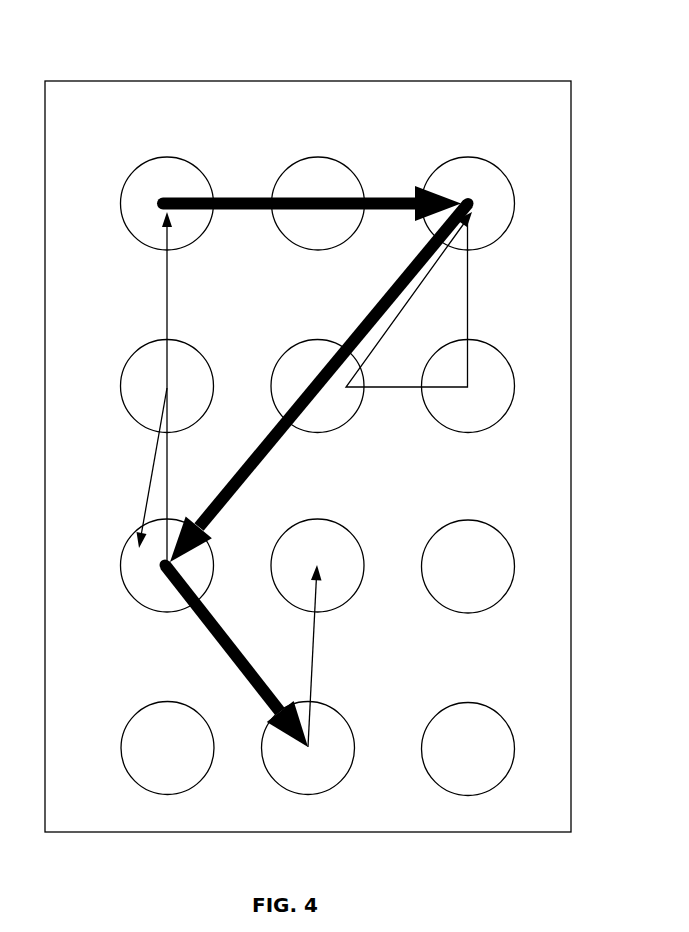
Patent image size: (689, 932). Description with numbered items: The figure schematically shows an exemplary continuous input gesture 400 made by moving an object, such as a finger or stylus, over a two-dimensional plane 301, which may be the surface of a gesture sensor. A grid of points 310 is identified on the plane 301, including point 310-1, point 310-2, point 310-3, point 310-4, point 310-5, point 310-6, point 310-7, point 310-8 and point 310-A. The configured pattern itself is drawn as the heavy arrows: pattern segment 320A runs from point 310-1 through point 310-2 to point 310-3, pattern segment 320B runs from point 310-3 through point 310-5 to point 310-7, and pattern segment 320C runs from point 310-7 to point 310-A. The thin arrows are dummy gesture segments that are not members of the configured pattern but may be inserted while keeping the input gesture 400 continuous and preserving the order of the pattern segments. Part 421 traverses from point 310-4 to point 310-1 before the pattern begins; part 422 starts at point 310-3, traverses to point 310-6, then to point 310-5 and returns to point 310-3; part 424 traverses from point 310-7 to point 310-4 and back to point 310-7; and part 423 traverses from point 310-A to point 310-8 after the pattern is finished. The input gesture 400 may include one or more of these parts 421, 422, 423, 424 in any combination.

The input gesture 400 is at (308, 420).
The two-dimensional plane 301 is at (308, 456).
The points 310 is at (318, 658).
The point 310-1 is at (167, 203).
The point 310-2 is at (318, 203).
The point 310-3 is at (468, 203).
The point 310-4 is at (167, 386).
The point 310-5 is at (316, 339).
The point 310-6 is at (468, 386).
The point 310-7 is at (120, 575).
The point 310-8 is at (317, 565).
The point 310-A is at (308, 748).
The pattern segment 320A is at (243, 197).
The pattern segment 320B is at (271, 450).
The pattern segment 320C is at (203, 632).
The part 421 is at (166, 283).
The part 422 is at (470, 275).
The part 423 is at (318, 632).
The part 424 is at (148, 478).